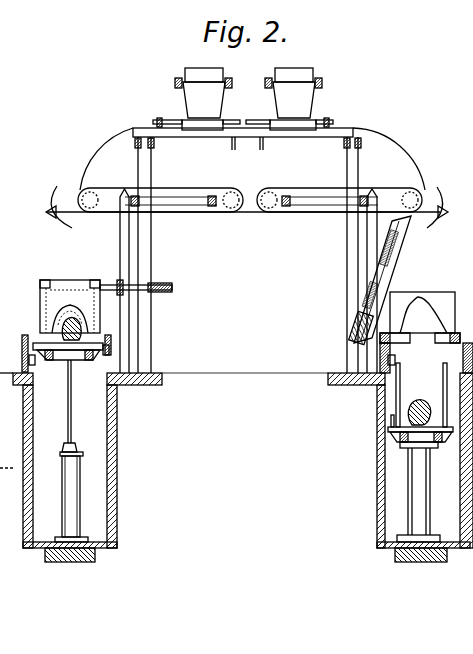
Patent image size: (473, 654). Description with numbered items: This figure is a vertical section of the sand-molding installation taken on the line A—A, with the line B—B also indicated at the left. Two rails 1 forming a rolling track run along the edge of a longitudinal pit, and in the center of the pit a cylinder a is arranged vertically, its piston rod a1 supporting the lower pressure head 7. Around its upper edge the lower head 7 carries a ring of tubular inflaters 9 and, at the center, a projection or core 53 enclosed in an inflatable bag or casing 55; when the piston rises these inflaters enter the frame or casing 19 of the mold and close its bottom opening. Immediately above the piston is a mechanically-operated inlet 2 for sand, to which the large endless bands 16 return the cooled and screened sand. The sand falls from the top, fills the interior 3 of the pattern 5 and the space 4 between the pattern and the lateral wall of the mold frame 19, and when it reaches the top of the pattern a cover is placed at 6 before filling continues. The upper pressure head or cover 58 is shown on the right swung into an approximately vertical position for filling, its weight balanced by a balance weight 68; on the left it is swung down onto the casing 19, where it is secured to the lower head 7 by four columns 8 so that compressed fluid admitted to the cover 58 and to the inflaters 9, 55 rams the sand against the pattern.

The rails 1 is at (118, 393).
The inlet for sand 2 is at (428, 199).
The interior of the pattern 3 is at (392, 313).
The space between pattern and mold frame wall 4 is at (437, 295).
The pattern 5 is at (383, 323).
The cover position 6 is at (418, 297).
The lower pressure head 7 is at (402, 443).
The columns 8 is at (80, 285).
The inflaters 9 is at (391, 422).
The endless bands 16 is at (117, 180).
The frame or casing 19 is at (390, 299).
The projection or core 53 is at (429, 388).
The inflatable bag or casing 55 is at (402, 437).
The upper pressure head or cover 58 is at (373, 256).
The balance weight 68 is at (367, 330).
The cylinder a is at (431, 488).
The piston rod a1 is at (102, 383).
The section line A— A is at (23, 373).
The section line B— B is at (7, 454).